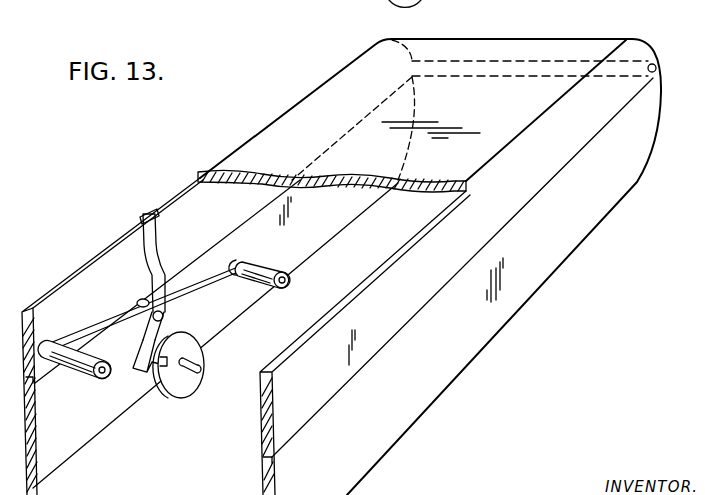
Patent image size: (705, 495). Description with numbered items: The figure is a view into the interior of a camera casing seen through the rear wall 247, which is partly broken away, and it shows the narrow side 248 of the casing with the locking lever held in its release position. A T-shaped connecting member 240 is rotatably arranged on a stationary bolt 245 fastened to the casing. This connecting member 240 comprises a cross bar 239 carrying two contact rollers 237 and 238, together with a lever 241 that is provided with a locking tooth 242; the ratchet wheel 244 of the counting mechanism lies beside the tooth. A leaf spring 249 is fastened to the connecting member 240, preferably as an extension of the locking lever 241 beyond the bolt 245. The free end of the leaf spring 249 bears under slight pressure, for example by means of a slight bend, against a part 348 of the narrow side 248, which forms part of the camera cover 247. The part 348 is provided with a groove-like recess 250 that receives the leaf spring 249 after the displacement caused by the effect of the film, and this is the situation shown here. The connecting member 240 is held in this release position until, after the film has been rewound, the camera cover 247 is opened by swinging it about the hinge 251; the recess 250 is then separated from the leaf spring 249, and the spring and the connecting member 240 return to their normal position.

The contact roller 237 is at (79, 362).
The contact roller 238 is at (267, 273).
The cross bar 239 is at (222, 268).
The T-shaped connecting member 240 is at (141, 316).
The locking lever 241 is at (156, 338).
The locking tooth 242 is at (148, 373).
The ratchet wheel 244 is at (187, 386).
The stationary bolt 245 is at (141, 300).
The rear wall 247 is at (350, 153).
The narrow side 248 is at (85, 268).
The leaf spring 249 is at (151, 250).
The groove-like recess 250 is at (146, 216).
The hinge 251 is at (512, 62).
The part of narrow side 348 is at (42, 312).